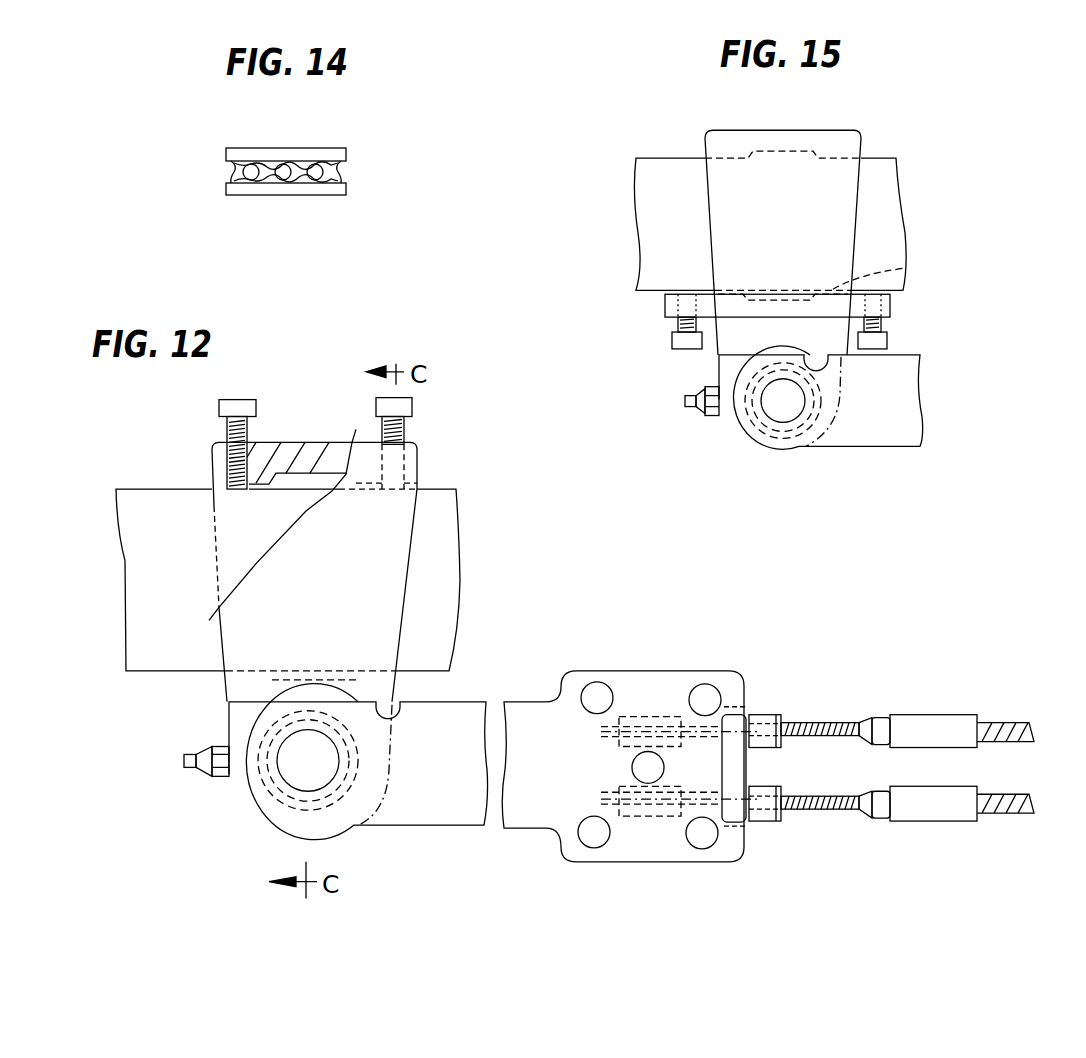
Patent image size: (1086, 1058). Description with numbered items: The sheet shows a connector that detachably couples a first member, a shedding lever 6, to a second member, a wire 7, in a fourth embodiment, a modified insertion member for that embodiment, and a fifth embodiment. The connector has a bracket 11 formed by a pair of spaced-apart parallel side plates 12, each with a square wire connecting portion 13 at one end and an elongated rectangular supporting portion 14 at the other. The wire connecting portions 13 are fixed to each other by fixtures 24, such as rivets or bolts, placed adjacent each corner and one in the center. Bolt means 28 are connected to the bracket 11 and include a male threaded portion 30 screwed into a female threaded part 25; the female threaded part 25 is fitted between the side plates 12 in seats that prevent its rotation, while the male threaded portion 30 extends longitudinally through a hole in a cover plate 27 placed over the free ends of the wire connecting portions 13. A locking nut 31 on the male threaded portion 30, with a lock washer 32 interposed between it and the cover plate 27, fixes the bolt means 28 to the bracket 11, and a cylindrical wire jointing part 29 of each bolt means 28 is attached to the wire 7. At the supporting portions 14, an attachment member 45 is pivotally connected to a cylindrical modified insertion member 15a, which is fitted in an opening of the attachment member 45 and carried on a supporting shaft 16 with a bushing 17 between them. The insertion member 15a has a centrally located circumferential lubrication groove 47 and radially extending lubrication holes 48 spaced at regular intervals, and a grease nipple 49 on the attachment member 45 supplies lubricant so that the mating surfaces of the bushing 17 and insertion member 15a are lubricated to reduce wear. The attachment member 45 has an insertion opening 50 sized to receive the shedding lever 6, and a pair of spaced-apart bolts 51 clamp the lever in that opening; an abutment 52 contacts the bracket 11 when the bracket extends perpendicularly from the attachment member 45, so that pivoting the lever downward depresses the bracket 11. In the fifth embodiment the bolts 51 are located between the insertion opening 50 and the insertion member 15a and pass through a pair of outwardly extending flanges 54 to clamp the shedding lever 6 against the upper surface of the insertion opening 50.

In FIG. 15, the shedding lever 6 is at (898, 188).
In FIG. 12, the shedding lever 6 is at (440, 545).
In FIG. 12, the wire 7 is at (1033, 743).
In FIG. 15, the bracket 11 is at (872, 450).
In FIG. 12, the bracket 11 is at (538, 682).
In FIG. 15, the side plates 12 is at (833, 451).
In FIG. 12, the side plates 12 is at (658, 667).
In FIG. 12, the wire connecting portion 13 is at (675, 690).
In FIG. 15, the supporting portion 14 is at (905, 385).
In FIG. 12, the supporting portion 14 is at (436, 818).
In FIG. 14, the modified insertion member 15a is at (330, 138).
In FIG. 15, the modified insertion member 15a is at (790, 433).
In FIG. 12, the modified insertion member 15a is at (333, 793).
In FIG. 15, the supporting shaft 16 is at (802, 405).
In FIG. 12, the supporting shaft 16 is at (328, 760).
In FIG. 15, the bushing 17 is at (757, 415).
In FIG. 12, the bushing 17 is at (272, 785).
In FIG. 12, the fixtures 24 is at (633, 767).
In FIG. 12, the female threaded part 25 is at (668, 785).
In FIG. 12, the cover plate 27 is at (733, 732).
In FIG. 12, the bolt means 28 is at (848, 716).
In FIG. 12, the cylindrical wire jointing part 29 is at (912, 745).
In FIG. 12, the male threaded portion 30 is at (832, 738).
In FIG. 12, the locking nut 31 is at (782, 743).
In FIG. 12, the lock washer 32 is at (748, 742).
In FIG. 15, the attachment member 45 is at (832, 125).
In FIG. 12, the attachment member 45 is at (422, 478).
In FIG. 14, the lubrication groove 47 is at (345, 167).
In FIG. 14, the lubrication holes 48 is at (317, 175).
In FIG. 15, the grease nipple 49 is at (704, 409).
In FIG. 12, the grease nipple 49 is at (205, 768).
In FIG. 15, the insertion opening 50 is at (905, 266).
In FIG. 12, the insertion opening 50 is at (215, 492).
In FIG. 15, the bolts 51 is at (889, 341).
In FIG. 12, the bolts 51 is at (243, 403).
In FIG. 15, the abutment 52 is at (806, 353).
In FIG. 12, the abutment 52 is at (402, 722).
In FIG. 15, the flanges 54 is at (892, 304).